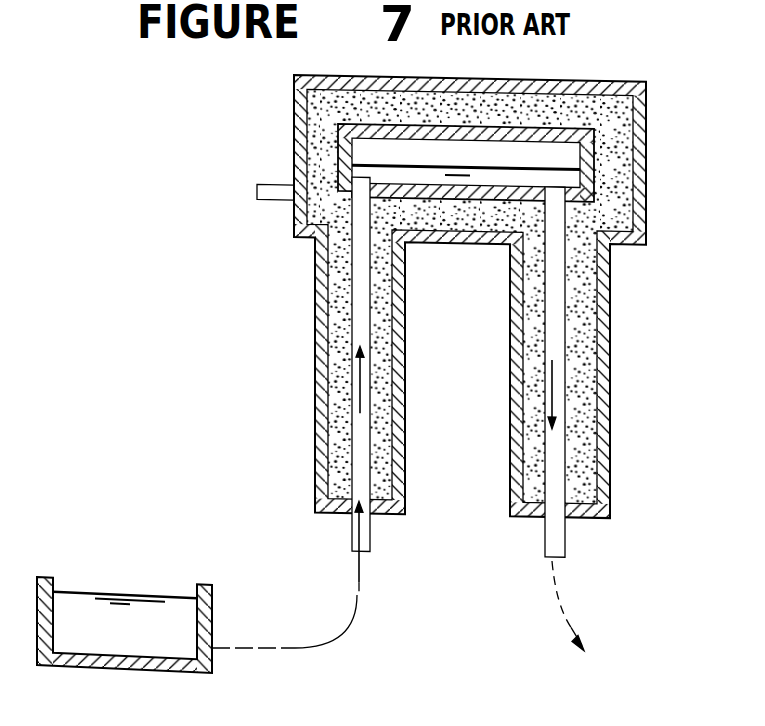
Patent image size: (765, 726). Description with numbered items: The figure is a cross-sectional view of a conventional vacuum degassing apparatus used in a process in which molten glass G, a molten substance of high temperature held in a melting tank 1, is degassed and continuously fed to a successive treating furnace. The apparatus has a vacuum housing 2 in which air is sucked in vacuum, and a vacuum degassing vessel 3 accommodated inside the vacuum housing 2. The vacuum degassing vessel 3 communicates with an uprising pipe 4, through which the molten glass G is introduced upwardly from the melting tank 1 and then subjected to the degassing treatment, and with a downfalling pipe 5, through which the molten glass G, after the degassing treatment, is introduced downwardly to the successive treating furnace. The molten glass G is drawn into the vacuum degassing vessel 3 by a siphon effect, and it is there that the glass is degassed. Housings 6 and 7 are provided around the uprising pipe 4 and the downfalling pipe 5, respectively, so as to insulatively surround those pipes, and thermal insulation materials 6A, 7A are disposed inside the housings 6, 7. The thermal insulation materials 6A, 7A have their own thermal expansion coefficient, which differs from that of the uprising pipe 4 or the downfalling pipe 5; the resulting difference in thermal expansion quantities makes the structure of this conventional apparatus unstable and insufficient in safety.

The melting tank 1 is at (205, 618).
The vacuum housing 2 is at (647, 96).
The vacuum degassing vessel 3 is at (597, 164).
The uprising pipe 4 is at (330, 455).
The downfalling pipe 5 is at (558, 455).
The housing 6 is at (320, 358).
The thermal insulation material 6A is at (330, 294).
The housing 7 is at (605, 359).
The thermal insulation material 7A is at (580, 290).
The molten glass G is at (380, 163).